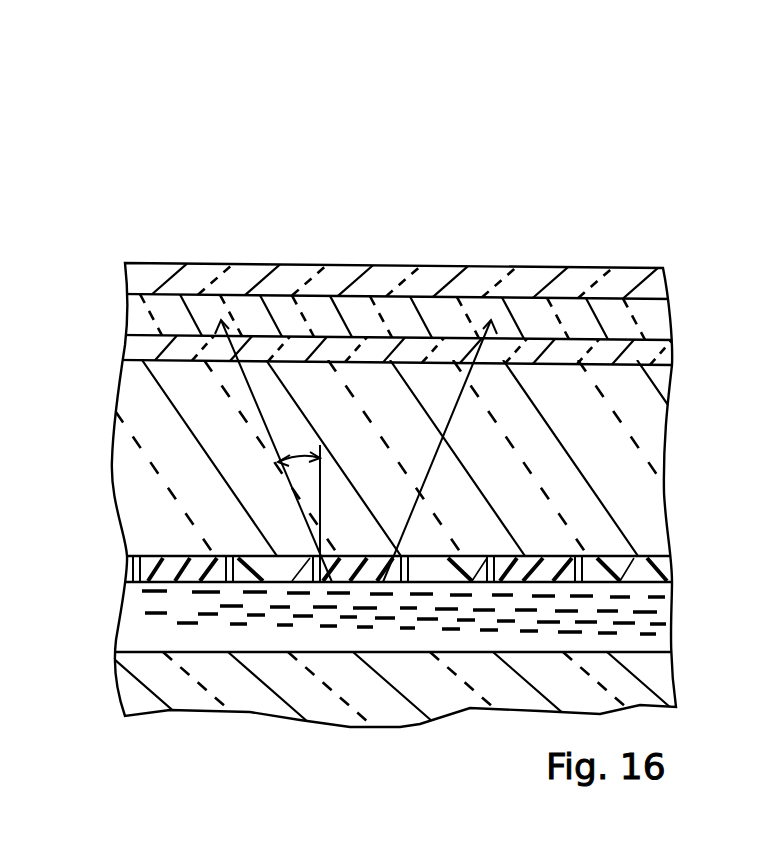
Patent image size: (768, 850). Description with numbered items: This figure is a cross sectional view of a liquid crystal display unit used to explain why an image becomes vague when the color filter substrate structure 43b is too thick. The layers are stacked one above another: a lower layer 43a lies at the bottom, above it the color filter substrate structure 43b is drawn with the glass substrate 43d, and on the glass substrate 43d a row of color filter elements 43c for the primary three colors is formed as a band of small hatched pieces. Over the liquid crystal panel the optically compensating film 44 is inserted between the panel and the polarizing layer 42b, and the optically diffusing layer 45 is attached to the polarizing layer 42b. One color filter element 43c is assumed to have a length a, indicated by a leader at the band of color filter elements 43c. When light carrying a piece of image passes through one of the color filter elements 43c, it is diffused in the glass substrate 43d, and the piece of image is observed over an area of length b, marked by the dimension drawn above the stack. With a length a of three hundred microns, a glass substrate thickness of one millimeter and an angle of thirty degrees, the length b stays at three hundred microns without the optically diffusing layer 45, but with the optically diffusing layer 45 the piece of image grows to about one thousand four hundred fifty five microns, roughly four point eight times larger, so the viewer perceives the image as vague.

The polarizing layer 42b is at (126, 276).
The optically diffusing layer 45 is at (137, 311).
The optically compensating film 44 is at (137, 351).
The color filter substrate structure 43b is at (85, 530).
The glass substrate 43d is at (135, 493).
The color filter elements 43c is at (167, 560).
The first substrate 43a is at (137, 689).
The length of color filter element a is at (352, 575).
The length of observed image area b is at (491, 310).